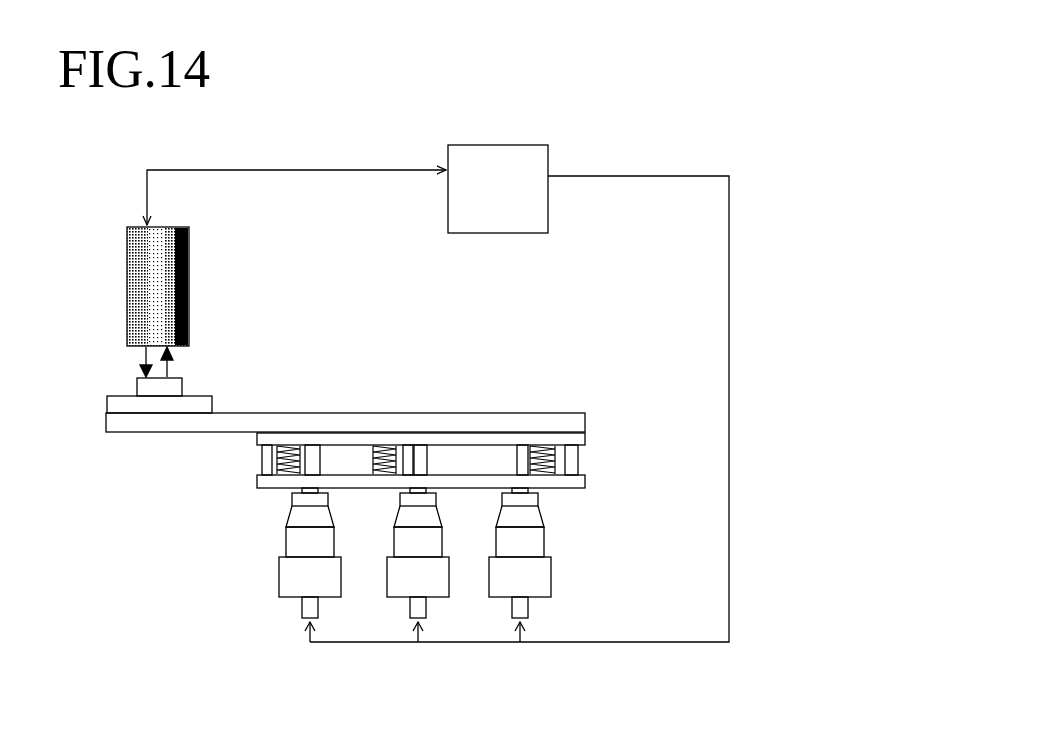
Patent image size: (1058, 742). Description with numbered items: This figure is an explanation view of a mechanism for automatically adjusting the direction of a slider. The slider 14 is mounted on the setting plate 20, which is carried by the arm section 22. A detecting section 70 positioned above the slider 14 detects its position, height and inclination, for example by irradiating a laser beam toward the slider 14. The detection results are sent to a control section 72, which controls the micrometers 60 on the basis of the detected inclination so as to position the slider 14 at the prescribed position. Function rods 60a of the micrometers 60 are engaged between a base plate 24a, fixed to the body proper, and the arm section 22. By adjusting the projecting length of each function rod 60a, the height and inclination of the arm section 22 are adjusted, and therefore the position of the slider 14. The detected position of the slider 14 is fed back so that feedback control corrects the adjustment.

The slider 14 is at (183, 381).
The setting plate 20 is at (126, 400).
The arm section 22 is at (209, 433).
The base plate 24a is at (560, 489).
The micrometer 60 is at (286, 571).
The function rod 60a is at (522, 458).
The detecting section 70 is at (190, 268).
The control section 72 is at (523, 157).